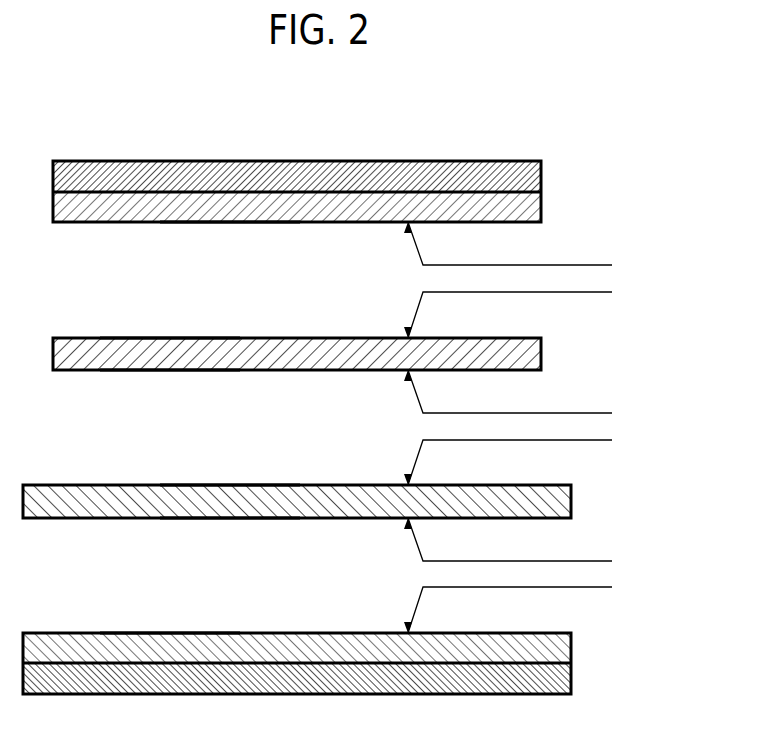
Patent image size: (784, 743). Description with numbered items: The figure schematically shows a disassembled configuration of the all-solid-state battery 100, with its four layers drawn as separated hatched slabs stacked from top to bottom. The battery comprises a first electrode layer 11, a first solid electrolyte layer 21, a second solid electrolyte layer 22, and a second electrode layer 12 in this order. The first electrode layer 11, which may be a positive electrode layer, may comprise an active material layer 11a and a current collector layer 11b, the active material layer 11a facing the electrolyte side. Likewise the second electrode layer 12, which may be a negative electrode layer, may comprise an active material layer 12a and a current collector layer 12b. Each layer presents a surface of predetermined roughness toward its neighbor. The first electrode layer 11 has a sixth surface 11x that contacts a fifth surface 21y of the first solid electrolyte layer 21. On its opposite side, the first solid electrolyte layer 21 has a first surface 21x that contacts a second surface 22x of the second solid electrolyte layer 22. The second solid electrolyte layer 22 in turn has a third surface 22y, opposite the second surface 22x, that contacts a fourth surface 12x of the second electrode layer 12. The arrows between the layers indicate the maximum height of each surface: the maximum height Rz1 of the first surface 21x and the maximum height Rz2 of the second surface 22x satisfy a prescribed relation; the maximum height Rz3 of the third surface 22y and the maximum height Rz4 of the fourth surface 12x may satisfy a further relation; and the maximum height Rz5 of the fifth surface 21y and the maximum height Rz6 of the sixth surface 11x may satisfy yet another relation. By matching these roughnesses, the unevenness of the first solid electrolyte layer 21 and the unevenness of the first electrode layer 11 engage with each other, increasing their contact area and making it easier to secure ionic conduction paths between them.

The all-solid-state battery 100 is at (321, 128).
The first electrode layer 11 is at (377, 191).
The active material layer 11a is at (541, 205).
The current collector layer 11b is at (541, 174).
The sixth surface 11x is at (217, 223).
The first solid electrolyte layer 21 is at (541, 352).
The fifth surface 21y is at (160, 338).
The first surface 21x is at (160, 370).
The second solid electrolyte layer 22 is at (571, 503).
The second surface 22x is at (220, 485).
The third surface 22y is at (220, 518).
The second electrode layer 12 is at (380, 663).
The current collector layer 12b is at (571, 647).
The active material layer 12a is at (571, 680).
The fourth surface 12x is at (160, 633).
The maximum height of the first surface Rz1 is at (532, 400).
The maximum height of the second surface Rz2 is at (532, 456).
The maximum height of the third surface Rz3 is at (532, 548).
The maximum height of the fourth surface Rz4 is at (532, 603).
The maximum height of the fifth surface Rz5 is at (532, 308).
The maximum height of the sixth surface Rz6 is at (532, 252).